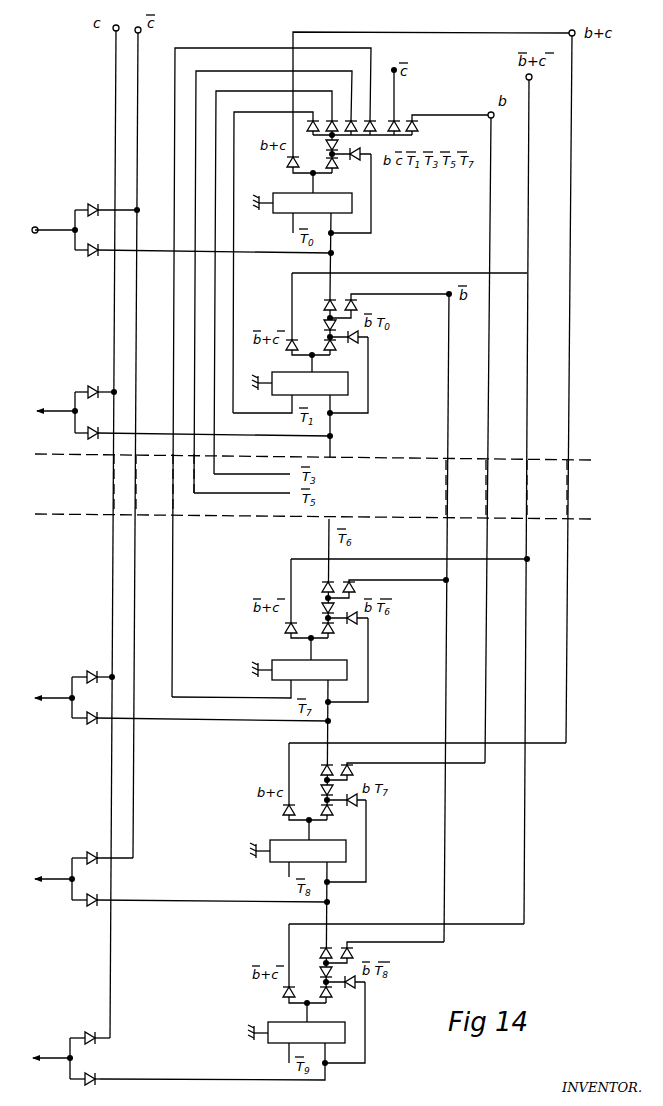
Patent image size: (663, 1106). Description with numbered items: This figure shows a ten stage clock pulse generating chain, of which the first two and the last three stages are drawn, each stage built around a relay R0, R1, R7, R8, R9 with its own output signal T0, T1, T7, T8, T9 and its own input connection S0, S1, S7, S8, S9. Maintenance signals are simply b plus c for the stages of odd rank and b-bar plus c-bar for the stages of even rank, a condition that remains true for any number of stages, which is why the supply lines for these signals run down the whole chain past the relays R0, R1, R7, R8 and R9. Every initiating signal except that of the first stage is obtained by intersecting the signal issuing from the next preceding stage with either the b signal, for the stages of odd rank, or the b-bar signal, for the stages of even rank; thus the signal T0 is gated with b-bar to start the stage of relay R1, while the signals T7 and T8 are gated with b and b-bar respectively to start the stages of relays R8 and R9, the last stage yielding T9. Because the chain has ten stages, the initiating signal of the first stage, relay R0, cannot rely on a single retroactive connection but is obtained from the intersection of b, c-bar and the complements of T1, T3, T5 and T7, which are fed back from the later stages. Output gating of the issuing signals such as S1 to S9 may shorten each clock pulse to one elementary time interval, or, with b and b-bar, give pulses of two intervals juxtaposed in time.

The relay R0 is at (302, 203).
The relay R1 is at (300, 383).
The relay R7 is at (299, 670).
The relay R8 is at (298, 851).
The relay R9 is at (296, 1032).
The input S0 diode gate S0 is at (179, 230).
The issuing signal S1 is at (179, 412).
The input S7 diode gate S7 is at (177, 697).
The input S8 diode gate S8 is at (177, 879).
The issuing signal S9 is at (68, 1058).
The output node T0 is at (341, 258).
The stage signal T1 is at (340, 440).
The stage signal T7 is at (338, 725).
The output node T8 is at (327, 902).
The output node T9 is at (335, 1076).